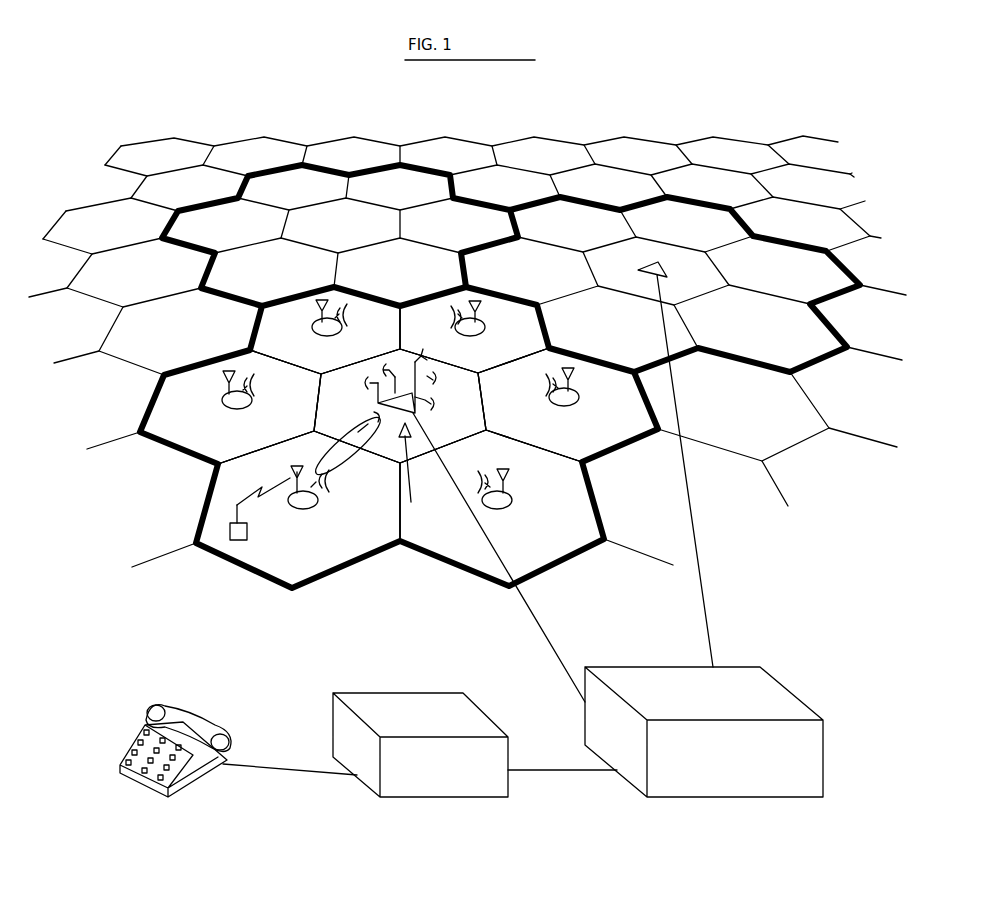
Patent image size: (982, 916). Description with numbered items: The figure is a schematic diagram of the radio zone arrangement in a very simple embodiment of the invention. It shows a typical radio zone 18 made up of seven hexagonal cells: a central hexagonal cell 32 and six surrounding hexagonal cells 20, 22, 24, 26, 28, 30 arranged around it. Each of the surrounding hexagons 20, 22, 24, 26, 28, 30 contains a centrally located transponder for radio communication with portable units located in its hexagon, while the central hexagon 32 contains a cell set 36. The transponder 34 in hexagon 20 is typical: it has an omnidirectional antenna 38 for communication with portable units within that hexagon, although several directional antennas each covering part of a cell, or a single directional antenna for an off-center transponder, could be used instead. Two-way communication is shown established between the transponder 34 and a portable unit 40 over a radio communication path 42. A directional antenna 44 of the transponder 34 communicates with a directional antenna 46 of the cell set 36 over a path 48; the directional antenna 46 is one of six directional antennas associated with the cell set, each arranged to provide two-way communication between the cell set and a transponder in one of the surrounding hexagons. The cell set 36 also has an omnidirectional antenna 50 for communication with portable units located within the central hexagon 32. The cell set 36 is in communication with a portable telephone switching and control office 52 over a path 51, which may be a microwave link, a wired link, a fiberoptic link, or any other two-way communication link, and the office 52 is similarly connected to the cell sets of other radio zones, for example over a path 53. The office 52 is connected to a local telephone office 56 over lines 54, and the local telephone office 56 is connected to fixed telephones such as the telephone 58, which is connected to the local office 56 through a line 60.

The radio zone 18 is at (230, 563).
The hexagonal cell 20 is at (298, 558).
The hexagonal cell 22 is at (190, 427).
The hexagonal cell 24 is at (290, 320).
The hexagonal cell 26 is at (423, 320).
The hexagonal cell 28 is at (595, 428).
The hexagonal cell 30 is at (552, 538).
The central hexagonal cell 32 is at (468, 397).
The transponder 34 is at (315, 507).
The cell set 36 is at (410, 393).
The omnidirectional antenna 38 is at (297, 472).
The portable unit 40 is at (247, 533).
The radio communication path 42 is at (267, 483).
The directional antenna 44 is at (322, 477).
The directional antenna 46 is at (377, 417).
The path 48 is at (365, 428).
The omnidirectional antenna 50 is at (412, 502).
The path 51 is at (527, 612).
The portable telephone switching and control office 52 is at (772, 702).
The path 53 is at (690, 518).
The lines 54 is at (541, 770).
The local telephone office 56 is at (420, 690).
The telephone 58 is at (160, 700).
The line 60 is at (289, 768).